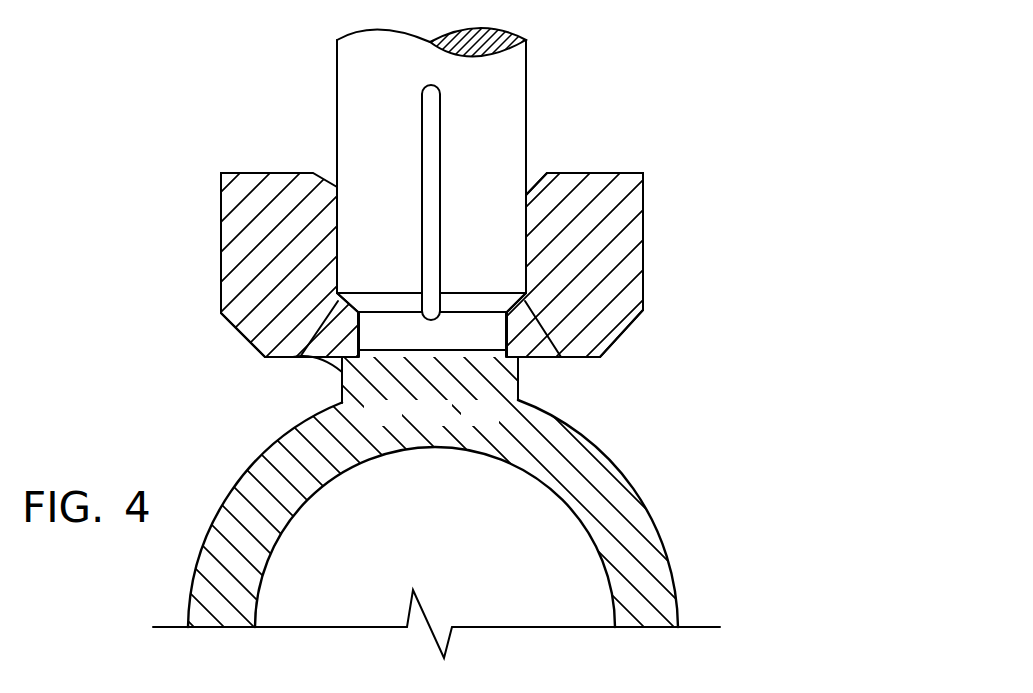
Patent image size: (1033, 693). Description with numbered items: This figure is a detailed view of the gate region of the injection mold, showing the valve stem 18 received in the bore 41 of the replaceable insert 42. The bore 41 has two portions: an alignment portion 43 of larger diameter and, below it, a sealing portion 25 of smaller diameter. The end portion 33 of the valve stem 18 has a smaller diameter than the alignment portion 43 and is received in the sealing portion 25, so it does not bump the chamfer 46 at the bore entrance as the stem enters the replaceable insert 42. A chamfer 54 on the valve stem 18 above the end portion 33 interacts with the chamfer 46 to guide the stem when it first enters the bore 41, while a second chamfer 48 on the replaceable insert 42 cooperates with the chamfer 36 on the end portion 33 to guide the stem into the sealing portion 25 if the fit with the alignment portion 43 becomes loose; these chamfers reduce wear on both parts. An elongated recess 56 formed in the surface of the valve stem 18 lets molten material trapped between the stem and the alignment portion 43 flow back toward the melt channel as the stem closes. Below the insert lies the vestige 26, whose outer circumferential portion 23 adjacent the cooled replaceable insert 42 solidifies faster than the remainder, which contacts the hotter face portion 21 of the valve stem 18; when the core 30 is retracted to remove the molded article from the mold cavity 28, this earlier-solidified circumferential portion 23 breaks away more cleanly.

The valve stem 18 is at (517, 66).
The elongated recess 56 is at (430, 135).
The chamfer 46 is at (535, 195).
The bore 41 is at (338, 220).
The replaceable insert 42 is at (623, 234).
The alignment portion 43 is at (525, 195).
The second chamfer 48 is at (348, 310).
The chamfer 54 is at (527, 306).
The chamfer 36 is at (257, 351).
The vestige 26 is at (342, 372).
The end portion 33 is at (372, 380).
The face portion 21 is at (397, 338).
The sealing portion 25 is at (500, 345).
The outer circumferential portion 23 is at (512, 352).
The mold cavity 28 is at (607, 463).
The core 30 is at (450, 560).